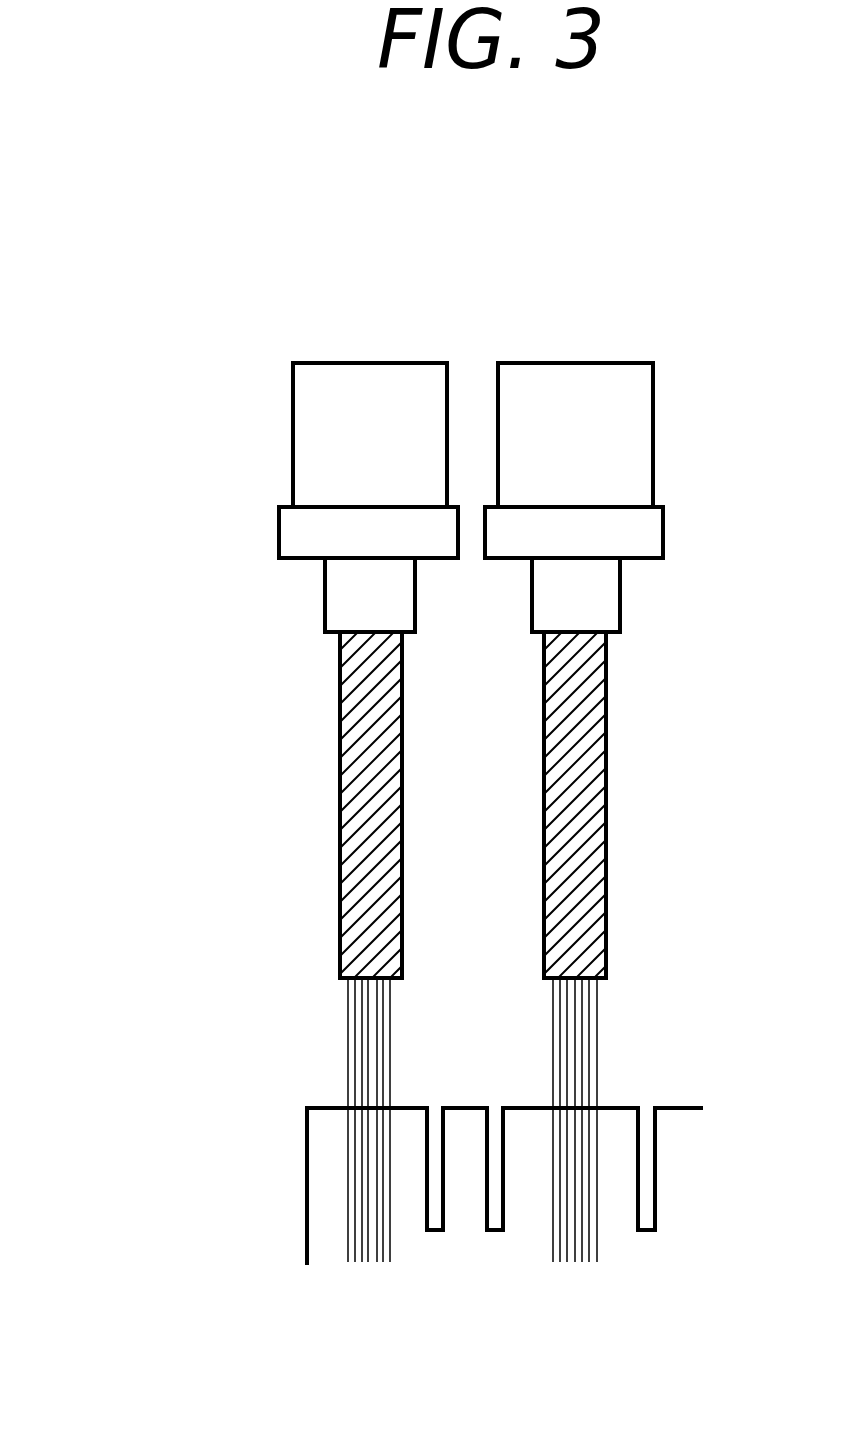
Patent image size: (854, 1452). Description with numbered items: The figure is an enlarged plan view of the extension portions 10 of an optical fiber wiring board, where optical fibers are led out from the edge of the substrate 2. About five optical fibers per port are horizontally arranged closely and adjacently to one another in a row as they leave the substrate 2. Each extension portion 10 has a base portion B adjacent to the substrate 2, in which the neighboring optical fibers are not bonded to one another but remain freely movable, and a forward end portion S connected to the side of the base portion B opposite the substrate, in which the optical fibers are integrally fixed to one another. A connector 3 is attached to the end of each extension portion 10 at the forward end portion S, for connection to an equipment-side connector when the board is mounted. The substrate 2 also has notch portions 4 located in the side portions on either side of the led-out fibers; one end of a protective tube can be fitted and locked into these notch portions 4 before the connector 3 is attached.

The connector 3 is at (320, 478).
The extension portion 10 is at (239, 921).
The forward end portion S is at (343, 797).
The base portion B is at (279, 1113).
The substrate 2 is at (304, 1180).
The notch portion 4 is at (492, 1107).